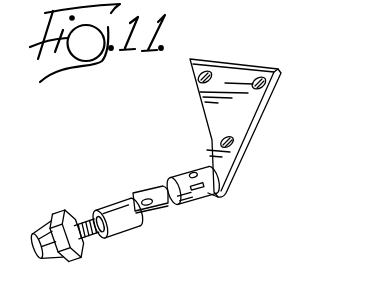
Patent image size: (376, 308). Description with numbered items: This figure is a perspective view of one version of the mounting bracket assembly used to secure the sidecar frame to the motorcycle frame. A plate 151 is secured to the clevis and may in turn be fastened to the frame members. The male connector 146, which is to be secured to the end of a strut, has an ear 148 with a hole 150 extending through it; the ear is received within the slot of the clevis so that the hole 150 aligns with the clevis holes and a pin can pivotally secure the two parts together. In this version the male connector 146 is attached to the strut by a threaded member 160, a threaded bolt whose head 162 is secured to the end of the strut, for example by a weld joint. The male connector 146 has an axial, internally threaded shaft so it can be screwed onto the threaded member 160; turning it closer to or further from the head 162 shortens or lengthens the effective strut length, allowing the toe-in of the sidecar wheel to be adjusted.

The male connector 146 is at (121, 238).
The ear 148 is at (138, 192).
The hole 150 is at (163, 203).
The plate 151 is at (246, 115).
The threaded member 160 is at (86, 241).
The head 162 is at (62, 212).